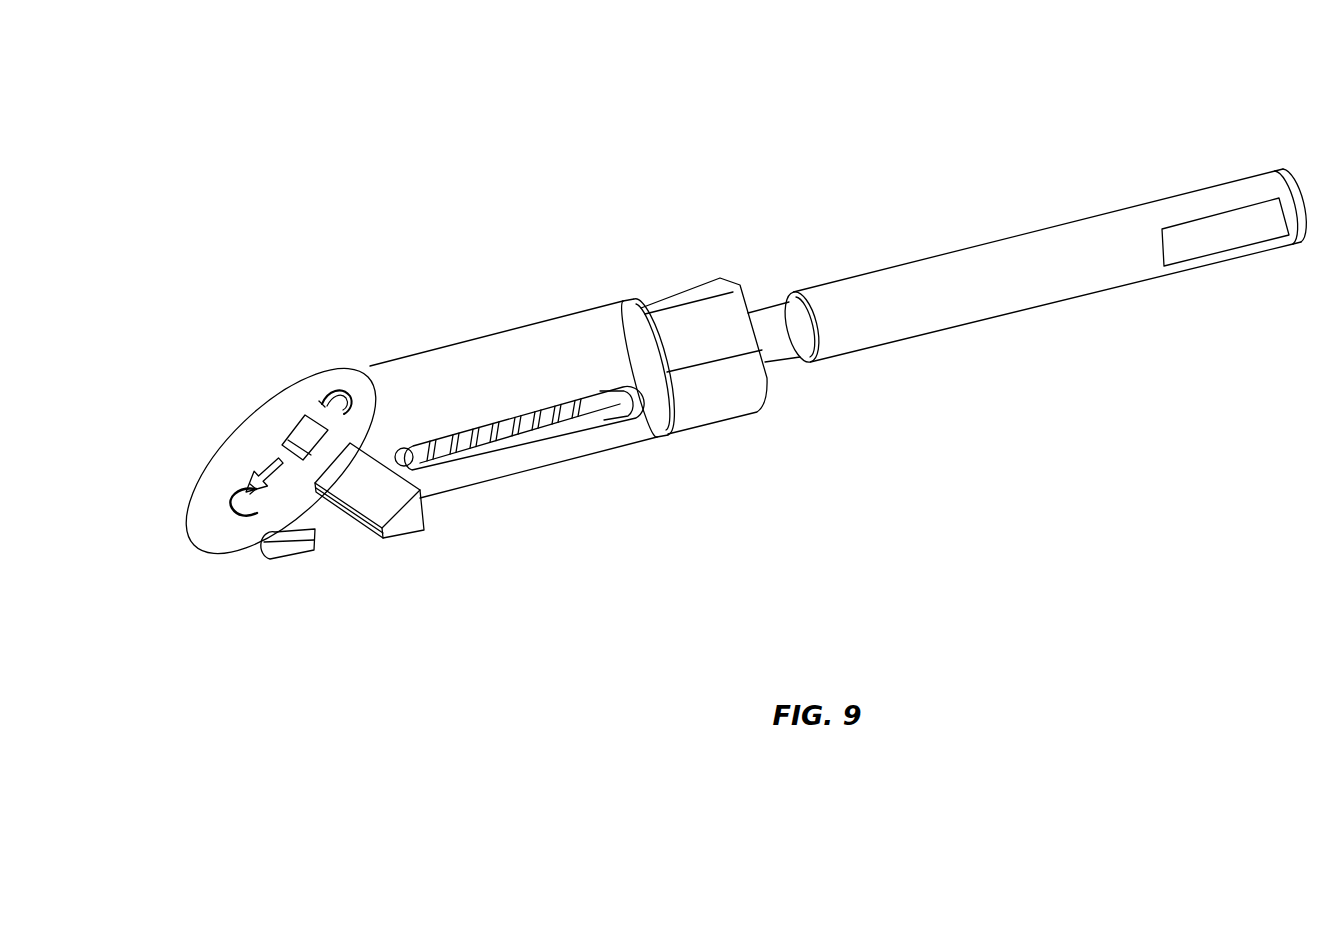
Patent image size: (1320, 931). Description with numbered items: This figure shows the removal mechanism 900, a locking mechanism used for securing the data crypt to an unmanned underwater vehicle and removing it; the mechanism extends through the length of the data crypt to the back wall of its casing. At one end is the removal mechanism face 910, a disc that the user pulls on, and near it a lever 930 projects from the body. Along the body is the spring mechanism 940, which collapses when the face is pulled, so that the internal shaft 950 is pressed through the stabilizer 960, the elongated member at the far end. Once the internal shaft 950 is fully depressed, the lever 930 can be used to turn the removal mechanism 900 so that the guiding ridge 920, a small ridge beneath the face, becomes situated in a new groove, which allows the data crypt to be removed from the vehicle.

The removal mechanism 900 is at (731, 370).
The removal mechanism face 910 is at (274, 433).
The guiding ridge 920 is at (292, 551).
The lever 930 is at (412, 522).
The spring mechanism 940 is at (538, 427).
The internal shaft 950 is at (785, 348).
The stabilizer 960 is at (1069, 279).